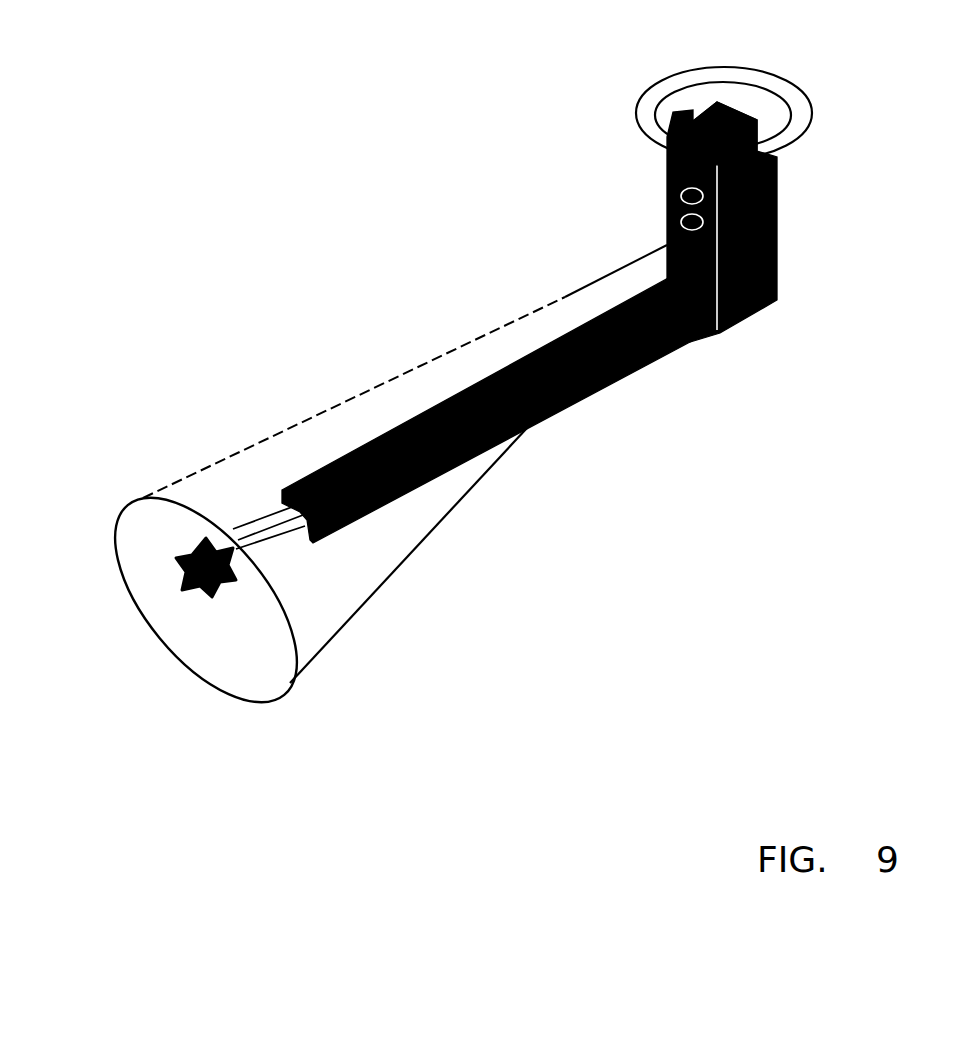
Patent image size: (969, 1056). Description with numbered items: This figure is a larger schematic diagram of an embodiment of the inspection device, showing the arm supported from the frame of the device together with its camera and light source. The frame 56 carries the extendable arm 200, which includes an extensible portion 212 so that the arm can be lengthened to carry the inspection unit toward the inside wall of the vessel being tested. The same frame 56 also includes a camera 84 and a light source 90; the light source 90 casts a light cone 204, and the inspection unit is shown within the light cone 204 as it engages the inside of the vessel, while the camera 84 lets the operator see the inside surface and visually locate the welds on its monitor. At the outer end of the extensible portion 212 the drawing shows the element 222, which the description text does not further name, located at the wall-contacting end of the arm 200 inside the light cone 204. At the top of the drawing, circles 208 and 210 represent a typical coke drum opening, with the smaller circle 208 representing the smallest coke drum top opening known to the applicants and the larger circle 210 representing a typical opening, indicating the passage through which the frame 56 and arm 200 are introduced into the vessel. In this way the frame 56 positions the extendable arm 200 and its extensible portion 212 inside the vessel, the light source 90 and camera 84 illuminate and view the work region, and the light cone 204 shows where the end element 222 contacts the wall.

The frame 56 is at (783, 265).
The camera 84 is at (775, 163).
The light source 90 is at (775, 223).
The extendable arm 200 is at (636, 366).
The light cone 204 is at (412, 560).
The circle 208 is at (783, 98).
The circle 210 is at (773, 77).
The extensible portion 212 is at (281, 531).
The nut 222 is at (180, 532).